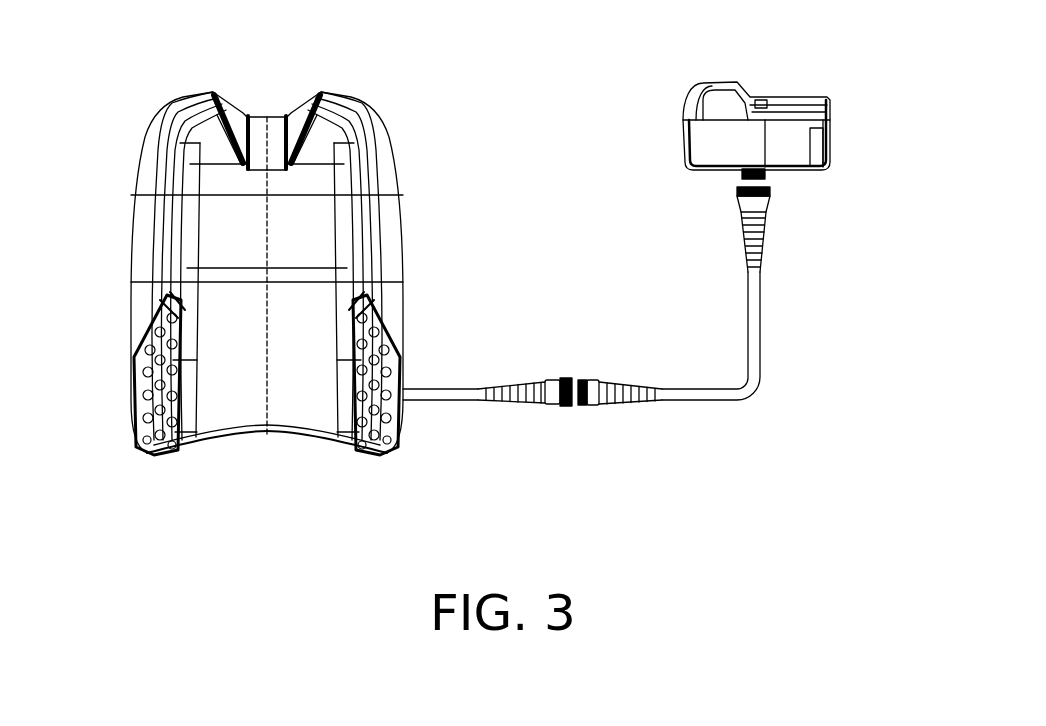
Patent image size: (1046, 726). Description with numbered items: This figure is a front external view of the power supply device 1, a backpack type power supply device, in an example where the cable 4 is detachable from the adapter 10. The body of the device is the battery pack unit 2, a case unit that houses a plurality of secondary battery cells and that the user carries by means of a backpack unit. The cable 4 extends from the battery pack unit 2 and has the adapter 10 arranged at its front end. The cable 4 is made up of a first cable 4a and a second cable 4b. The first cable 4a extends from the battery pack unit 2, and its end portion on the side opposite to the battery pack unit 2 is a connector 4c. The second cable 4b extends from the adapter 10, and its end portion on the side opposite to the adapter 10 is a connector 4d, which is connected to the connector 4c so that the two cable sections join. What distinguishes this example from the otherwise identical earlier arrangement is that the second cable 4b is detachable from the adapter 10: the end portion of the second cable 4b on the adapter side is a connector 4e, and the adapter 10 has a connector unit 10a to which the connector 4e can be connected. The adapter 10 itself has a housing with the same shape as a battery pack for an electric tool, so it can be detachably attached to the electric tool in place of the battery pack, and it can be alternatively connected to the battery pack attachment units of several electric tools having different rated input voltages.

The power supply device 1 is at (652, 573).
The battery pack unit 2 is at (143, 142).
The cable 4 is at (763, 382).
The first cable 4a is at (460, 387).
The second cable 4b is at (713, 388).
The connector 4c is at (556, 379).
The connector 4d is at (594, 407).
The connector 4e is at (770, 200).
The adapter 10 is at (690, 95).
The connector unit 10a is at (744, 175).